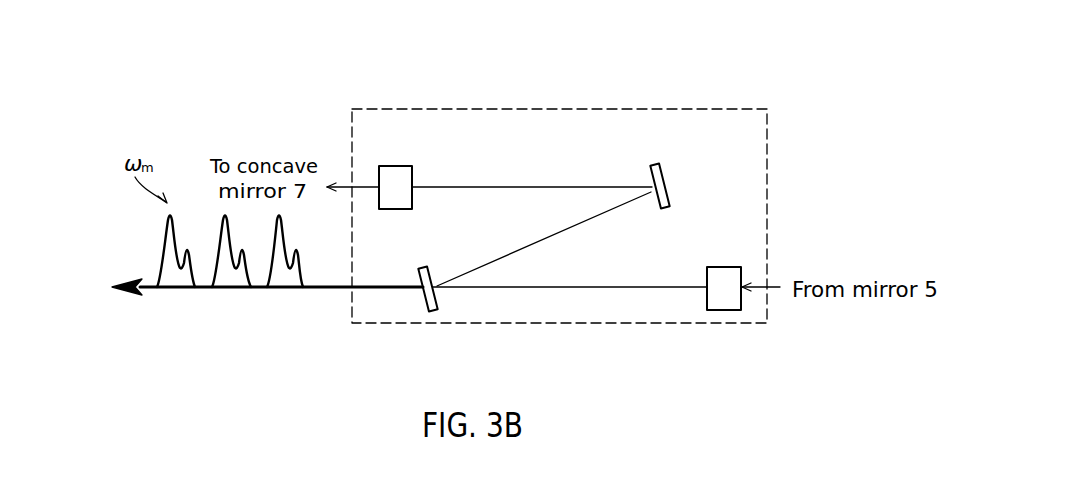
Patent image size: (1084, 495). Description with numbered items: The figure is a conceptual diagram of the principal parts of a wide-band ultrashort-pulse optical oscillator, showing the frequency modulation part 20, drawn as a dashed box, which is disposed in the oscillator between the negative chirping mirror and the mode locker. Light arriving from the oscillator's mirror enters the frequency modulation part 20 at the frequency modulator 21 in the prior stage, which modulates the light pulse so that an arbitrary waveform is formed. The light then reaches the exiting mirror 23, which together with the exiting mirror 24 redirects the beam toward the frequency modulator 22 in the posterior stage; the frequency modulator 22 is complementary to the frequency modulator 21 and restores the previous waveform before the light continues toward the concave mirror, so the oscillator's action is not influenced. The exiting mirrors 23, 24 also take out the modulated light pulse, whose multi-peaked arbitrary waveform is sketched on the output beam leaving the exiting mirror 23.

The frequency modulation part 20 is at (551, 108).
The frequency modulator 21 is at (725, 267).
The frequency modulator 22 is at (398, 166).
The exiting mirror 23 is at (423, 297).
The exiting mirror 24 is at (654, 163).